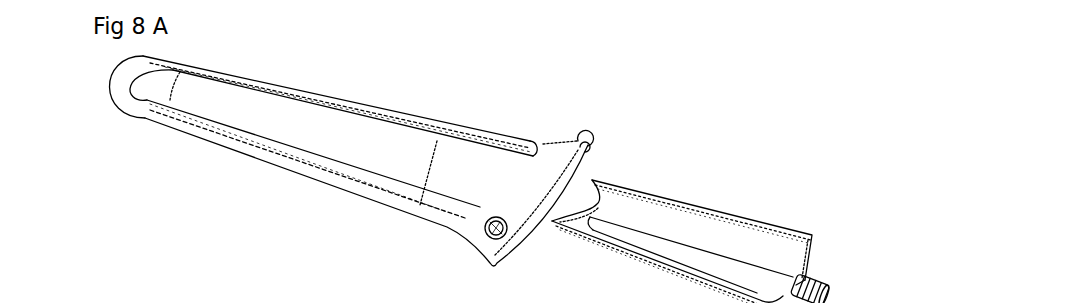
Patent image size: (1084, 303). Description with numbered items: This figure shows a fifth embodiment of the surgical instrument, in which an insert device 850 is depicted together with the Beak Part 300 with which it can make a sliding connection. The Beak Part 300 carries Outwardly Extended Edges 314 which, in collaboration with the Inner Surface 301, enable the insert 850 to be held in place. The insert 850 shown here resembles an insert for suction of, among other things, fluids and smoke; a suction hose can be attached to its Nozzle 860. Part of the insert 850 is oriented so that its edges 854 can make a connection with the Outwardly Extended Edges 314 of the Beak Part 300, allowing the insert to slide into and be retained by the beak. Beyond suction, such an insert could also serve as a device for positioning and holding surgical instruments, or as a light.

The Beak Part 300 is at (483, 180).
The Inner Surface 301 is at (318, 140).
The Outwardly Extended Edges 314 is at (398, 120).
The insert device 850 is at (627, 228).
The edges 854 is at (710, 270).
The Nozzle 860 is at (823, 290).